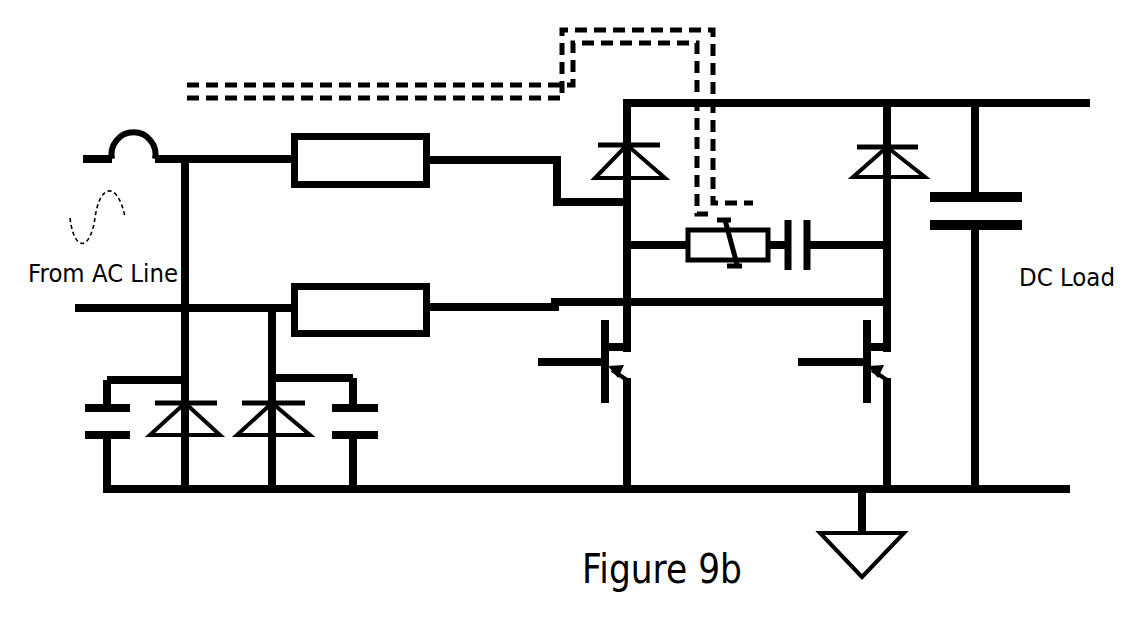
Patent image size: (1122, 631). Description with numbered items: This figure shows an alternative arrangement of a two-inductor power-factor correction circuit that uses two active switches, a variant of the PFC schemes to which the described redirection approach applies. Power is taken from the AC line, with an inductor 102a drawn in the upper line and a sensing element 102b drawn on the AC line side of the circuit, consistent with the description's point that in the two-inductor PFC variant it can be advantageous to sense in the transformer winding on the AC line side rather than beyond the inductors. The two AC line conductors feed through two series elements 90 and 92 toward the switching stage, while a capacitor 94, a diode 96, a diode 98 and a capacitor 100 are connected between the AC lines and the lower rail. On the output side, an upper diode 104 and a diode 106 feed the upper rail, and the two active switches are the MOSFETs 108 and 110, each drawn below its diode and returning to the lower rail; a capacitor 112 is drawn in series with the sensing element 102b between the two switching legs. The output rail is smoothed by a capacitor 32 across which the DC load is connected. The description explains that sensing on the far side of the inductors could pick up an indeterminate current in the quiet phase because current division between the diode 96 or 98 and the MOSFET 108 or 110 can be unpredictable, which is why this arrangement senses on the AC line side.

The DC load capacitor 32 is at (1002, 207).
The resistor 90 is at (317, 190).
The resistor 92 is at (432, 335).
The capacitor 94 is at (95, 452).
The diode 96 is at (170, 452).
The diode 98 is at (252, 452).
The capacitor 100 is at (372, 452).
The inductor 102a is at (133, 152).
The varistor 102b is at (766, 224).
The active switch 104 is at (593, 163).
The diode 106 is at (847, 145).
The MOSFET 108 is at (602, 398).
The MOSFET 110 is at (853, 388).
The capacitor 112 is at (823, 232).